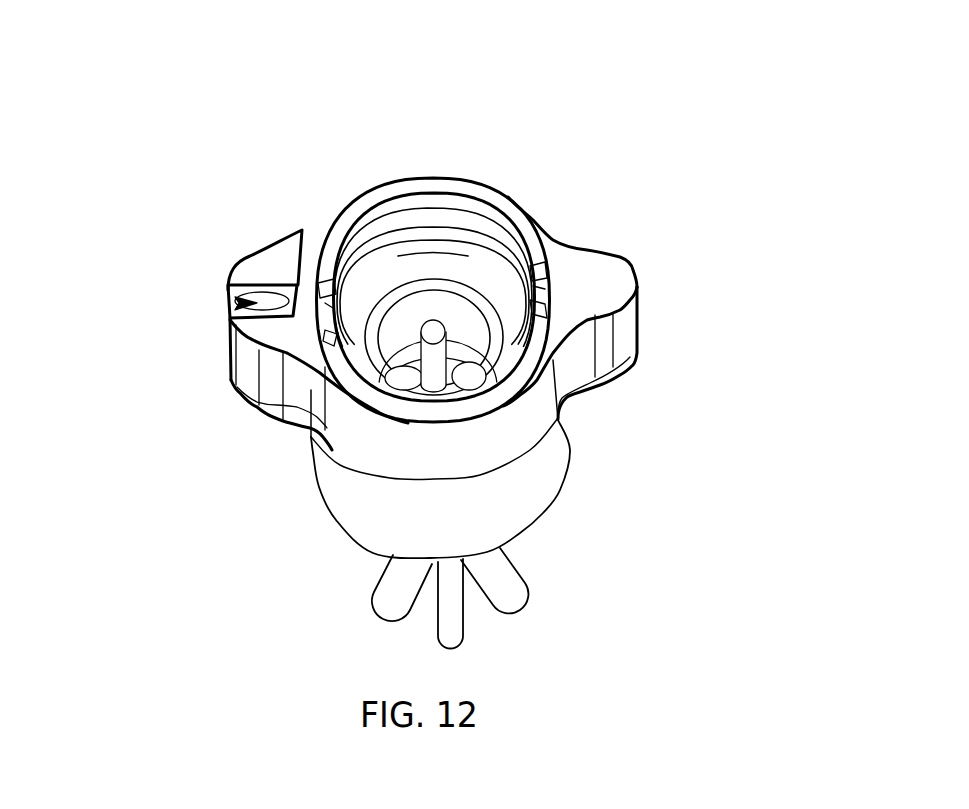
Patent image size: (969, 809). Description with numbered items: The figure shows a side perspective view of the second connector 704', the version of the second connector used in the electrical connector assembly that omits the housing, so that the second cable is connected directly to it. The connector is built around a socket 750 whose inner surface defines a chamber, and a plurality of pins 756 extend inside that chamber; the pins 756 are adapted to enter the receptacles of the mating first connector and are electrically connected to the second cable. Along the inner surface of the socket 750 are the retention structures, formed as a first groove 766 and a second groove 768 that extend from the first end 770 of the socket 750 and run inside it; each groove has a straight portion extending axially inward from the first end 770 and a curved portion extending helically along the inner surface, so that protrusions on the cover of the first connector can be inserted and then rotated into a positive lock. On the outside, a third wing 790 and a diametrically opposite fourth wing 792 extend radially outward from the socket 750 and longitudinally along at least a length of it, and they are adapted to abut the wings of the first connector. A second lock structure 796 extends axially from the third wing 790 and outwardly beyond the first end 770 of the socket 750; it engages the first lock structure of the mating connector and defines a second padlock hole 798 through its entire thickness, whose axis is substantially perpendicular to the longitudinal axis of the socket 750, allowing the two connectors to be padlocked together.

The second connector 704' is at (713, 413).
The socket 750 is at (490, 433).
The pins 756 is at (400, 368).
The first groove 766 is at (353, 262).
The second groove 768 is at (545, 282).
The first end 770 is at (508, 197).
The third wing 790 is at (275, 410).
The fourth wing 792 is at (630, 323).
The second lock structure 796 is at (270, 267).
The second padlock hole 798 is at (238, 303).